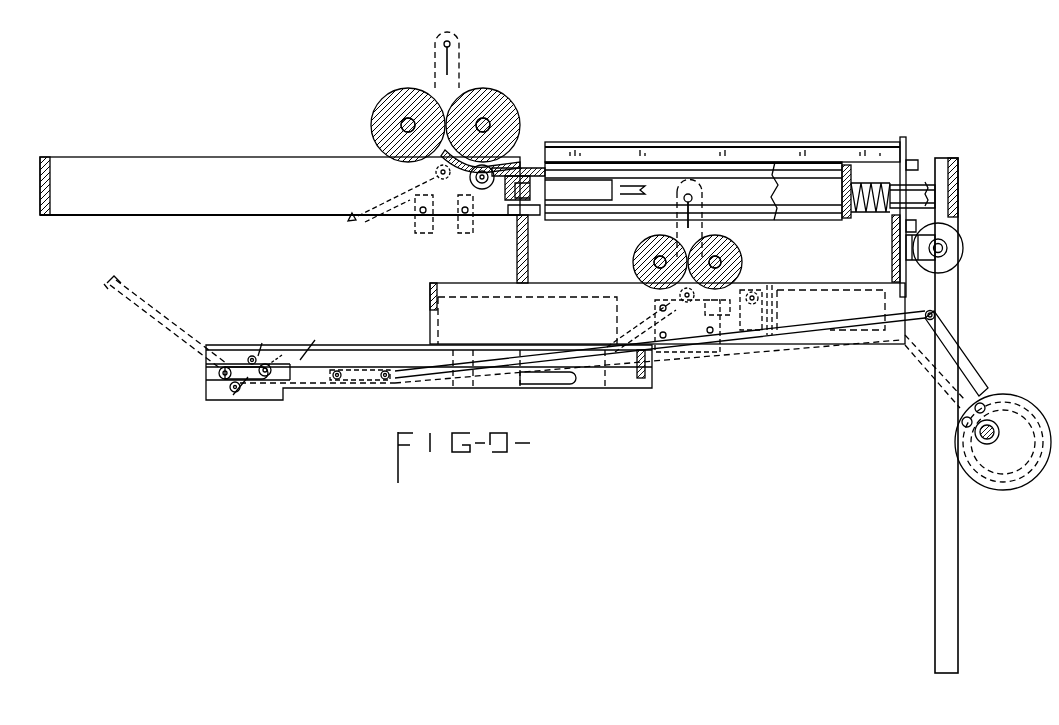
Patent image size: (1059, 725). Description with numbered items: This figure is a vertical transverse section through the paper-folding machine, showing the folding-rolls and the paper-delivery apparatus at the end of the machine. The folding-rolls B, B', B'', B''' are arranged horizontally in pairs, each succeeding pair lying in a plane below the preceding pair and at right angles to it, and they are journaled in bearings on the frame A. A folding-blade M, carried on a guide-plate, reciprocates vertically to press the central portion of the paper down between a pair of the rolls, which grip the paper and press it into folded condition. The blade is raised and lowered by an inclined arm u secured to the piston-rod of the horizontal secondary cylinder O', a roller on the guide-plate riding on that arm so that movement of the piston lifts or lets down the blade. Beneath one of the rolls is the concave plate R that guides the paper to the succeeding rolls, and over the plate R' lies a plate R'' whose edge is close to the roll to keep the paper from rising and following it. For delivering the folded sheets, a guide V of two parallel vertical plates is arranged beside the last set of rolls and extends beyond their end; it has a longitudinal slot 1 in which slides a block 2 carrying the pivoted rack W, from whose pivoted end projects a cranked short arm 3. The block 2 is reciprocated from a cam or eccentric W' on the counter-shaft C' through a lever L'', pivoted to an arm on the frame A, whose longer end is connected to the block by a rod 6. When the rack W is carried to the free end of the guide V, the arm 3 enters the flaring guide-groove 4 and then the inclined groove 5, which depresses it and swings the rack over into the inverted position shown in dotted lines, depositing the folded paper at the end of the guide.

The frame A is at (499, 415).
The folding-roll B is at (445, 125).
The folding-roll B' is at (740, 191).
The folding-roll B'' is at (660, 262).
The folding-roll B''' is at (715, 262).
The folding-blade M is at (453, 68).
The concave plate R is at (444, 195).
The plate R' is at (518, 158).
The plate R'' is at (492, 147).
The inclined arm u is at (393, 199).
The rack W is at (211, 322).
The cam or eccentric W' is at (1003, 442).
The counter-shaft C' is at (997, 432).
The lever L'' is at (949, 360).
The secondary cylinder O' is at (785, 287).
The guide V is at (366, 350).
The longitudinal slot 1 is at (540, 374).
The sliding block 2 is at (360, 364).
The cranked short arm 3 is at (261, 346).
The flaring guide-groove 4 is at (273, 361).
The inclined guide-groove 5 is at (243, 379).
The rod 6 is at (582, 347).